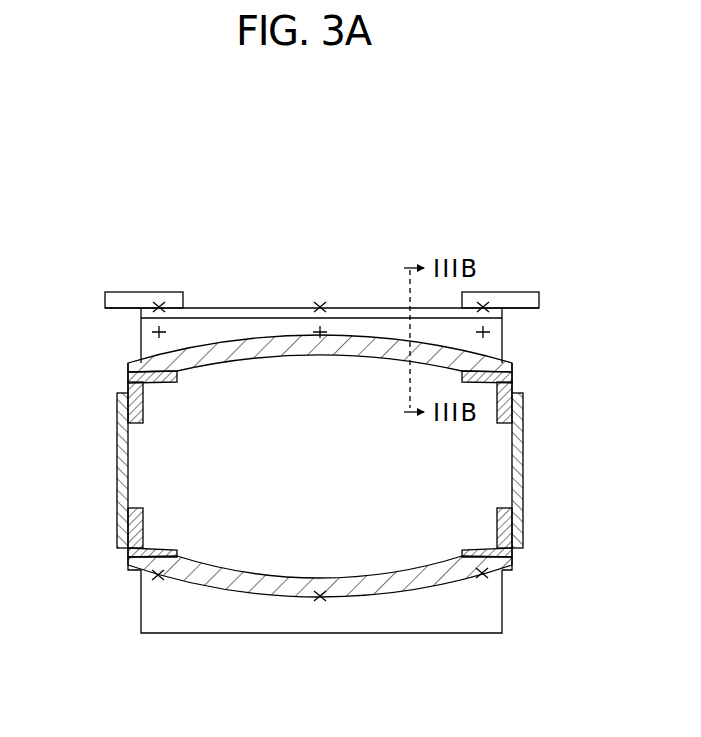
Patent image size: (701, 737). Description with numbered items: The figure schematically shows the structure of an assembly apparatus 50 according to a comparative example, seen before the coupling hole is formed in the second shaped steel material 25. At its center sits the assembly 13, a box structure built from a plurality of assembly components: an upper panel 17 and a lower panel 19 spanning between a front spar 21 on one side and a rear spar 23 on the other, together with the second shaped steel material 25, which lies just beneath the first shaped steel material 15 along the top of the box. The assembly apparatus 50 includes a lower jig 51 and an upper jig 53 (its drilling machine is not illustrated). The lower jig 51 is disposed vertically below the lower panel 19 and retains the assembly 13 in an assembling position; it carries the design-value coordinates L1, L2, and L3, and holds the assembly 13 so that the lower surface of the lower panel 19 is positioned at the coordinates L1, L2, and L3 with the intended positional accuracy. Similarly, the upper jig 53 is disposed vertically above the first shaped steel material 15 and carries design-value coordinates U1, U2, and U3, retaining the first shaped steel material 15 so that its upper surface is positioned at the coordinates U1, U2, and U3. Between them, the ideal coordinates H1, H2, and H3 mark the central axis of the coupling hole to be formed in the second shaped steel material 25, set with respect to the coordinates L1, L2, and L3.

The assembly apparatus 50 is at (522, 112).
The assembly 13 is at (86, 332).
The first shaped steel material 15 is at (505, 314).
The upper panel 17 is at (150, 341).
The lower panel 19 is at (388, 594).
The front spar 21 is at (117, 470).
The rear spar 23 is at (523, 470).
The second shaped steel material 25 is at (504, 340).
The lower jig 51 is at (497, 615).
The upper jig 53 is at (142, 292).
The coordinate U1 is at (159, 304).
The coordinate U2 is at (320, 304).
The coordinate U3 is at (483, 304).
The ideal coordinate H1 is at (162, 330).
The ideal coordinate H2 is at (322, 330).
The ideal coordinate H3 is at (490, 330).
The coordinate L1 is at (158, 580).
The coordinate L2 is at (320, 600).
The coordinate L3 is at (482, 578).